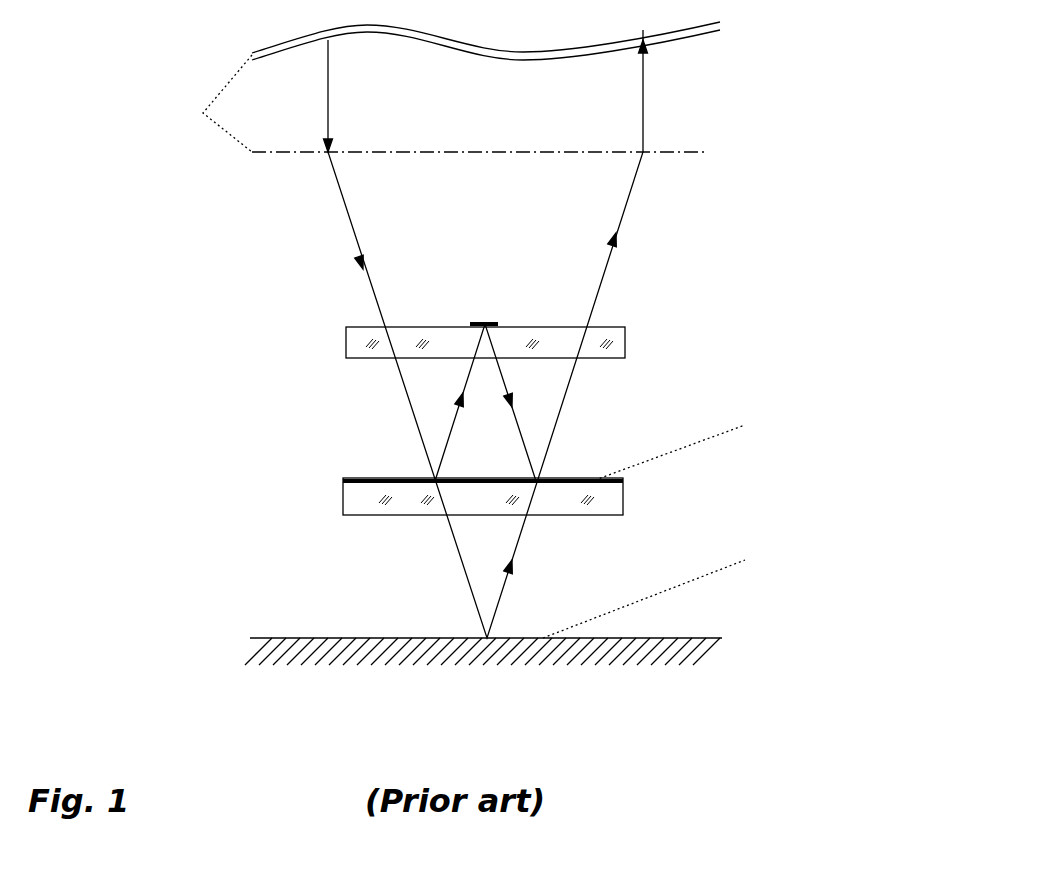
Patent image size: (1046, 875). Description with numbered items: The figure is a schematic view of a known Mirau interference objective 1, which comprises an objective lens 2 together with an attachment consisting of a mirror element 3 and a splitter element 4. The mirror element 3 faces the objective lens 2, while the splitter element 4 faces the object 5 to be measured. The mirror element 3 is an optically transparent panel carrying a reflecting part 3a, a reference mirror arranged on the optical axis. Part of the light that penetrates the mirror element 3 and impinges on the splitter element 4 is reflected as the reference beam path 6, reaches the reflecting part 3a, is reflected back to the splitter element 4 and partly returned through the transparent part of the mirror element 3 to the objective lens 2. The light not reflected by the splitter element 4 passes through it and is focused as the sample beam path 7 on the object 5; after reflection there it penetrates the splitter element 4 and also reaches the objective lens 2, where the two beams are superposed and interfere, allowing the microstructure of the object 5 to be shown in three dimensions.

The interference objective 1 is at (795, 135).
The objective lens 2 is at (419, 103).
The mirror element 3 is at (343, 342).
The reflecting part 3a is at (485, 324).
The splitter element 4 is at (343, 500).
The object 5 is at (312, 636).
The reference beam path 6 is at (460, 383).
The sample beam path 7 is at (445, 571).